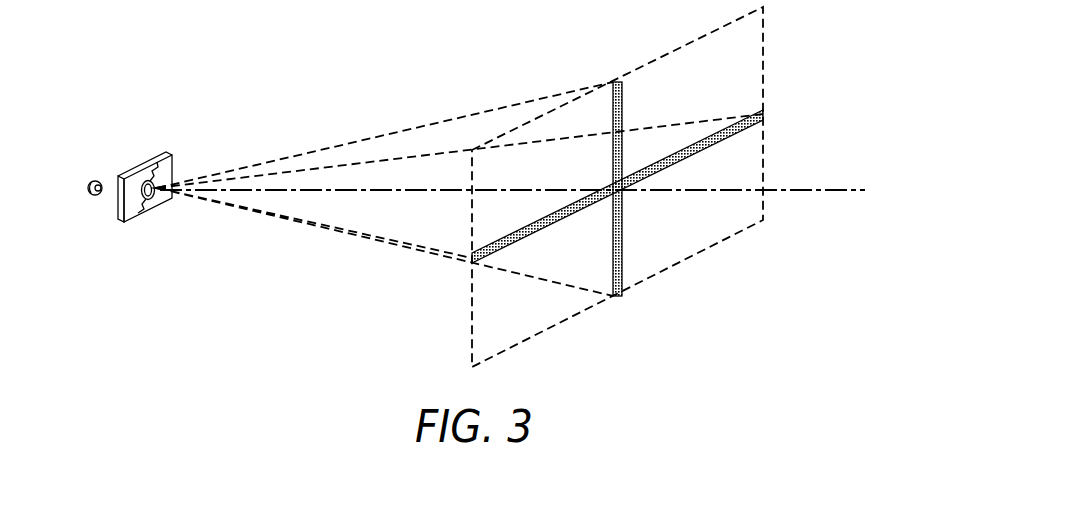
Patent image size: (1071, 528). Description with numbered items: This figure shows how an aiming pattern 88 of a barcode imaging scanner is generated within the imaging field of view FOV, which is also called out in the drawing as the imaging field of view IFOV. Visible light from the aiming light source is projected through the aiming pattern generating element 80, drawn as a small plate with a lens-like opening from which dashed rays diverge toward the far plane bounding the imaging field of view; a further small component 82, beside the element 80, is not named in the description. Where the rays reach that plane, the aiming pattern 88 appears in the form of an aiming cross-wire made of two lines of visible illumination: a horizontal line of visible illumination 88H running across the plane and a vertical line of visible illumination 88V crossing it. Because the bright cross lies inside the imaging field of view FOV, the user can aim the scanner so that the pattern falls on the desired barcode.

The aiming pattern generating element 80 is at (187, 150).
The aiming light source 82 is at (97, 197).
The aiming pattern 88 is at (639, 202).
The horizontal line of visible illumination 88H is at (497, 258).
The vertical line of visible illumination 88V is at (622, 267).
The imaging field of view FOV is at (740, 53).
The imaging field of view IFOV is at (685, 62).